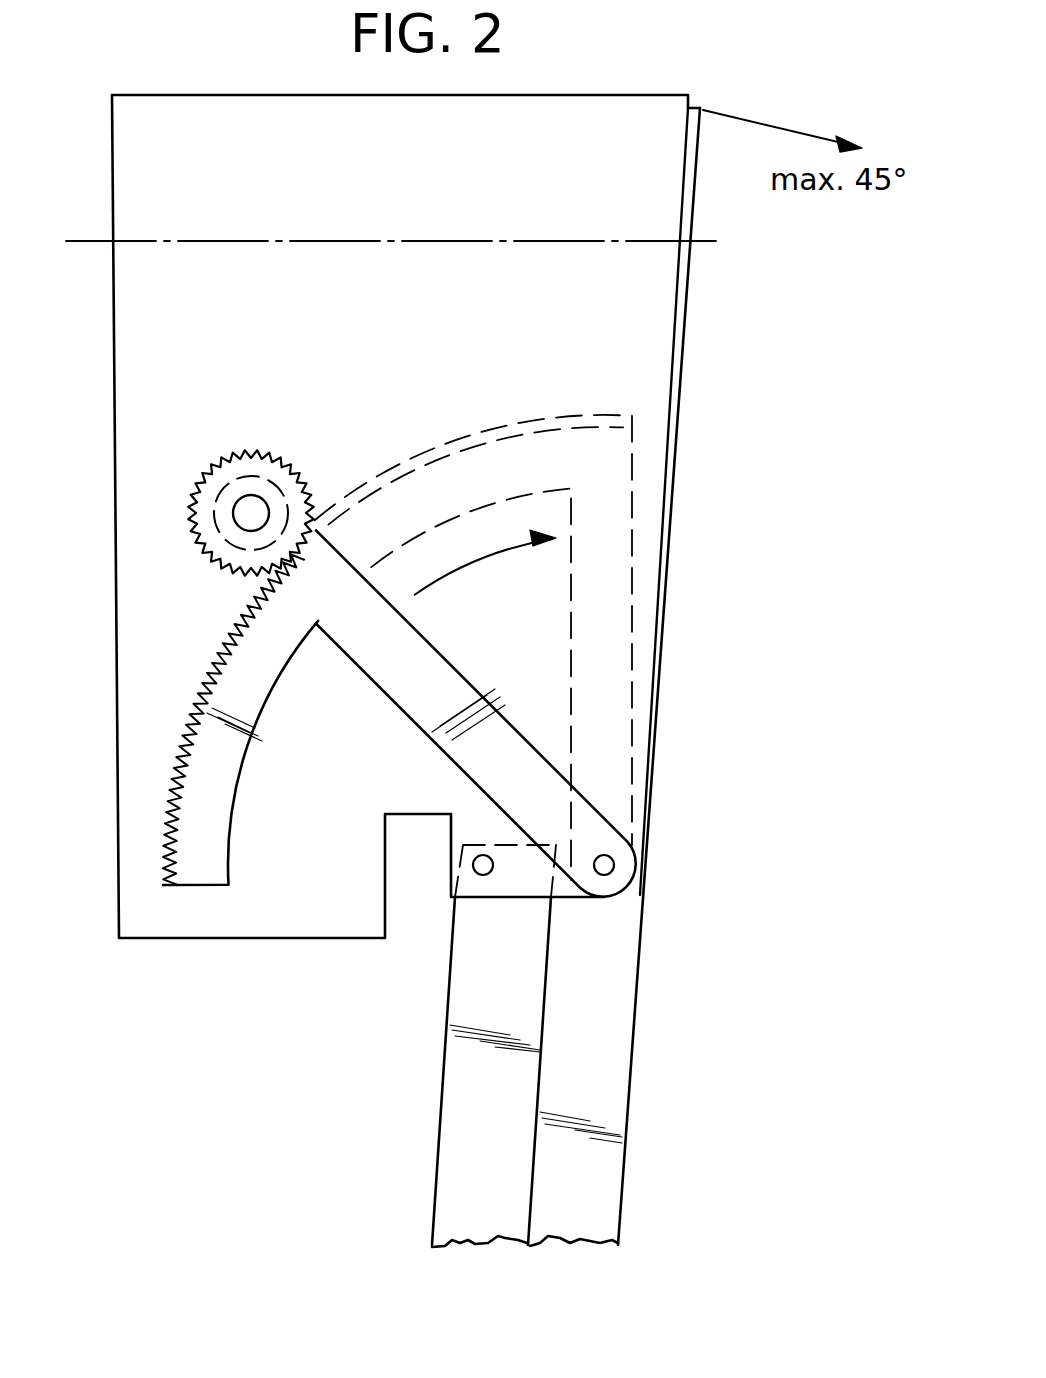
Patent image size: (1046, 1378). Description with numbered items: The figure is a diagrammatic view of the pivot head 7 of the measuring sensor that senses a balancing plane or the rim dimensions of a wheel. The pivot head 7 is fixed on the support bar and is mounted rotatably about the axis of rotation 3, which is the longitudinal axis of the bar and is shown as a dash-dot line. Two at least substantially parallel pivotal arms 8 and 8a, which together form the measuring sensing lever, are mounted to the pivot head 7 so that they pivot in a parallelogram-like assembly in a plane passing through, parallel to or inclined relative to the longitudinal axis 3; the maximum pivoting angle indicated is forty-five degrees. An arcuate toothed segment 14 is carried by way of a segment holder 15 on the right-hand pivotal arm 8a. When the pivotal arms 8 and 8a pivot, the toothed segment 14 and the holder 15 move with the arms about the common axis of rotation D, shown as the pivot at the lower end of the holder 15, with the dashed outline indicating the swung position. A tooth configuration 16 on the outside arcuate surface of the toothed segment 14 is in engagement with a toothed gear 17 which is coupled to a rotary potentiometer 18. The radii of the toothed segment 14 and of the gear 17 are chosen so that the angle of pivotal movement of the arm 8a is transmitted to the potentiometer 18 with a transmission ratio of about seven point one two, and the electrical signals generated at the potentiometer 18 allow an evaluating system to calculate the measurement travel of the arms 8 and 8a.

The axis of rotation 3 is at (92, 241).
The pivot head 7 is at (142, 312).
The pivotal arm 8 is at (470, 1092).
The pivotal arm 8a is at (595, 1080).
The arcuate toothed segment 14 is at (181, 719).
The segment holder 15 is at (525, 768).
The tooth configuration 16 is at (205, 692).
The toothed gear 17 is at (195, 530).
The rotary potentiometer 18 is at (215, 478).
The common axis of rotation D is at (614, 865).